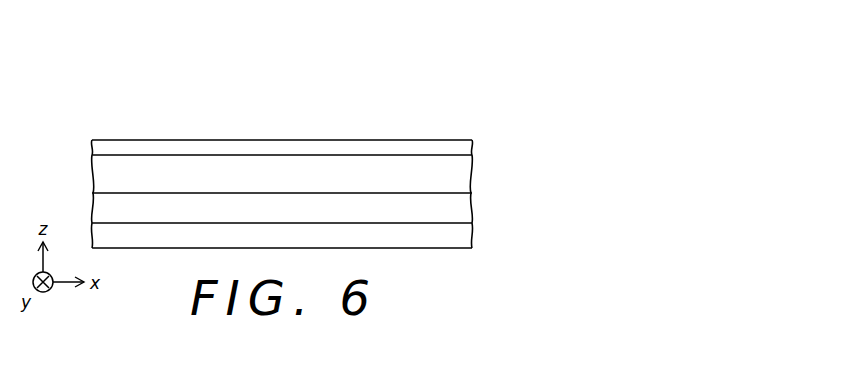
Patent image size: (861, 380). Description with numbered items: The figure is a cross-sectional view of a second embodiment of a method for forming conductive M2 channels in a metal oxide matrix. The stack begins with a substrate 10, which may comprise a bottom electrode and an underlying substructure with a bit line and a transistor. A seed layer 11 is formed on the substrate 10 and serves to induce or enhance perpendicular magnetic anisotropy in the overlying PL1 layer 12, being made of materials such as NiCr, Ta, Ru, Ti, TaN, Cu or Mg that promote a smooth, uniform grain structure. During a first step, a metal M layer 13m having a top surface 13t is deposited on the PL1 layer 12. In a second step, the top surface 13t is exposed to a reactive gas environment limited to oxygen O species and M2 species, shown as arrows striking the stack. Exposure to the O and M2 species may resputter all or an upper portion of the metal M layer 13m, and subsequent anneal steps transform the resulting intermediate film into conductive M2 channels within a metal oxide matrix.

The substrate 10 is at (465, 233).
The seed layer 11 is at (465, 205).
The PL1 layer 12 is at (465, 173).
The metal M layer 13m is at (465, 147).
The top surface 13t is at (449, 138).
The oxygen species O is at (169, 126).
The M2 species M2 is at (242, 126).